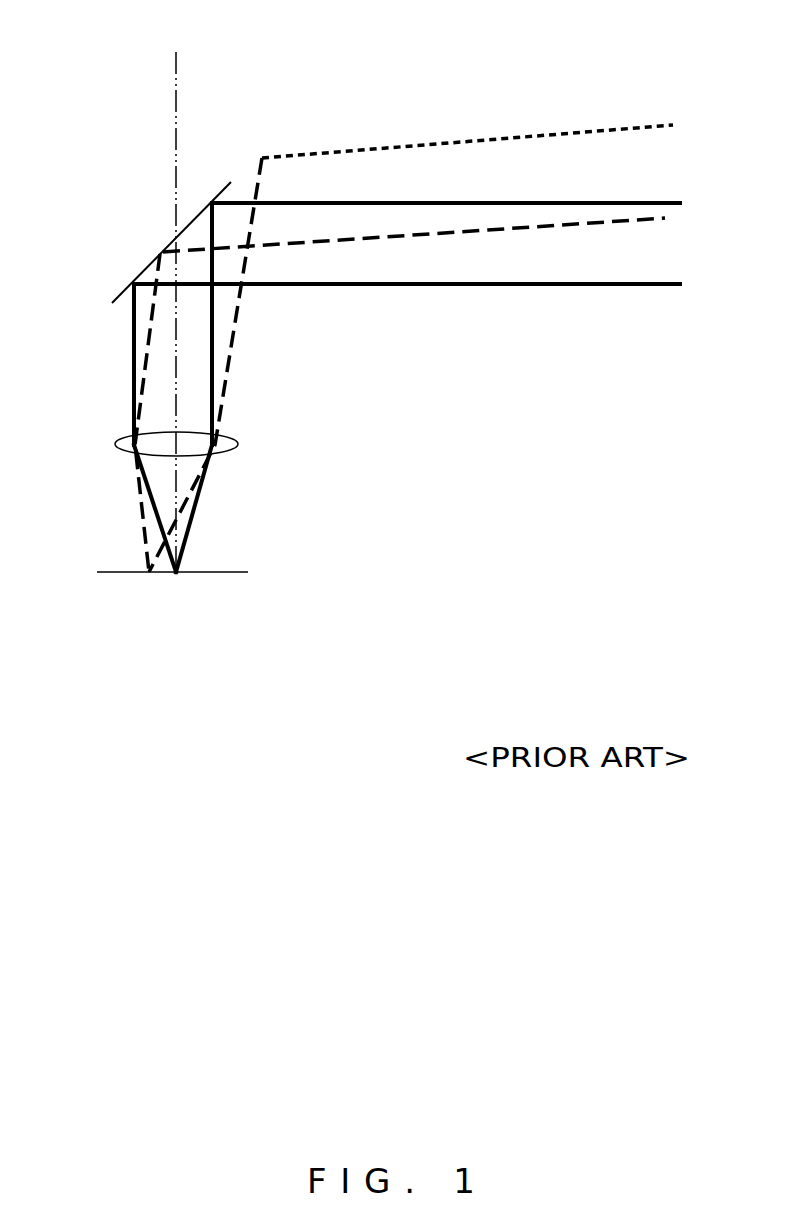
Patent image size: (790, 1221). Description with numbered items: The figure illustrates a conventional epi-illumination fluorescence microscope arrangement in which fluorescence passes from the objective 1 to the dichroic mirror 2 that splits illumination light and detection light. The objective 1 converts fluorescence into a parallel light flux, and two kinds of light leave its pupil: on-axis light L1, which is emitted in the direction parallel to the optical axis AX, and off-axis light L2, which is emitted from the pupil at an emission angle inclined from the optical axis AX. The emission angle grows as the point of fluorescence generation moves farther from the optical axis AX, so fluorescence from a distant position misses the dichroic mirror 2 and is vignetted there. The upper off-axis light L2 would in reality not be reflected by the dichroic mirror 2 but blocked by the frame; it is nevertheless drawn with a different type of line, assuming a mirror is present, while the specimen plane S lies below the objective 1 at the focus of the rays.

The optical axis AX is at (177, 92).
The dichroic mirror 2 is at (152, 260).
The objective 1 is at (115, 443).
The sample surface S is at (118, 572).
The on-axis light L1 is at (527, 205).
The off-axis light L2 is at (627, 218).